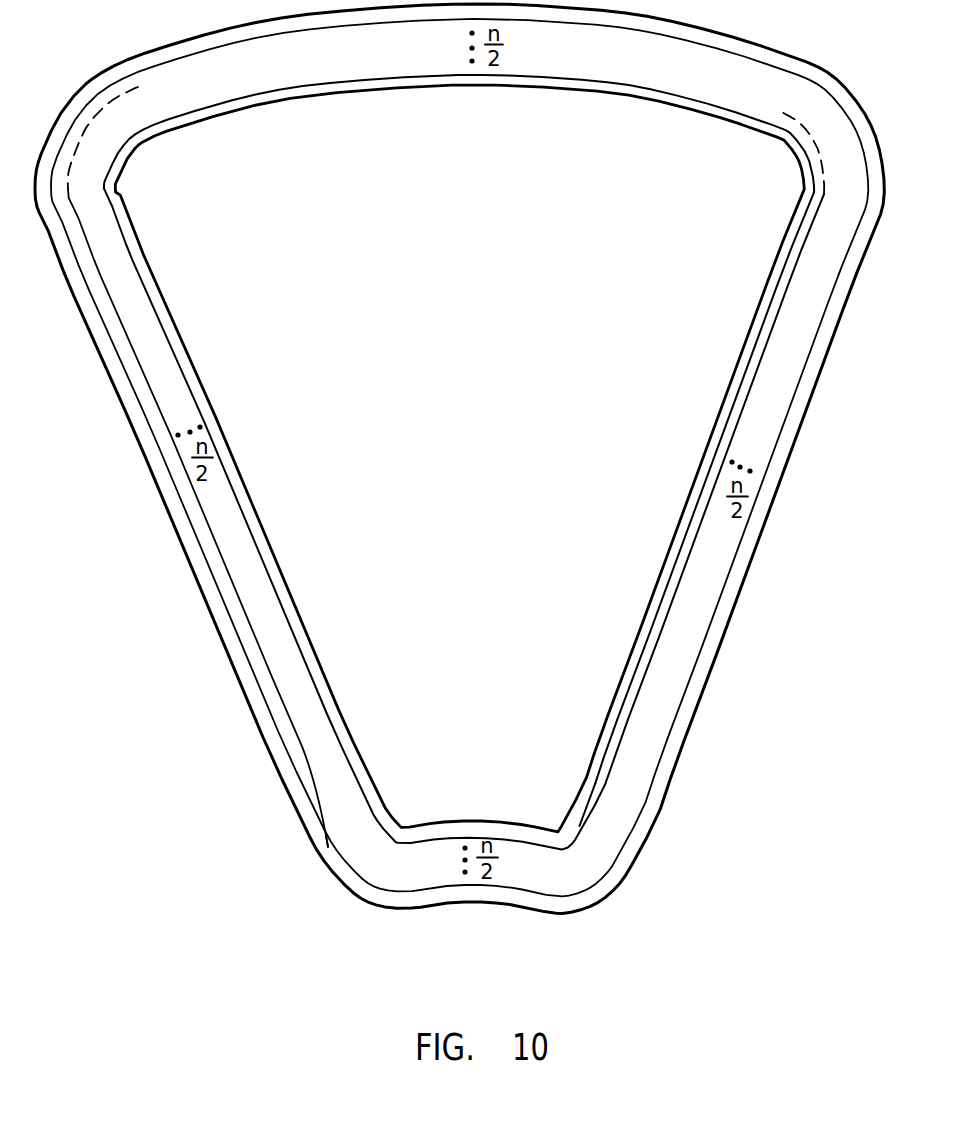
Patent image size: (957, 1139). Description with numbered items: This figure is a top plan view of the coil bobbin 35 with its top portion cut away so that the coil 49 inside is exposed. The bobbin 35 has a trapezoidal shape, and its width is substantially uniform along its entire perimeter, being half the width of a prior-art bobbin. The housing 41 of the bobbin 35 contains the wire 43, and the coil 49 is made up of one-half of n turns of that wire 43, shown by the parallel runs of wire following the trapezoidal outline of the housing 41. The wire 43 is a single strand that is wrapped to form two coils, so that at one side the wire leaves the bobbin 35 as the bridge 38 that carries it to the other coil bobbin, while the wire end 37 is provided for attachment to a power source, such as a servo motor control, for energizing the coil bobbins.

The coil bobbin 35 is at (747, 598).
The wire end 37 is at (580, 826).
The bridge 38 is at (328, 847).
The housing 41 is at (296, 616).
The wire 43 is at (239, 500).
The coil 49 is at (105, 330).